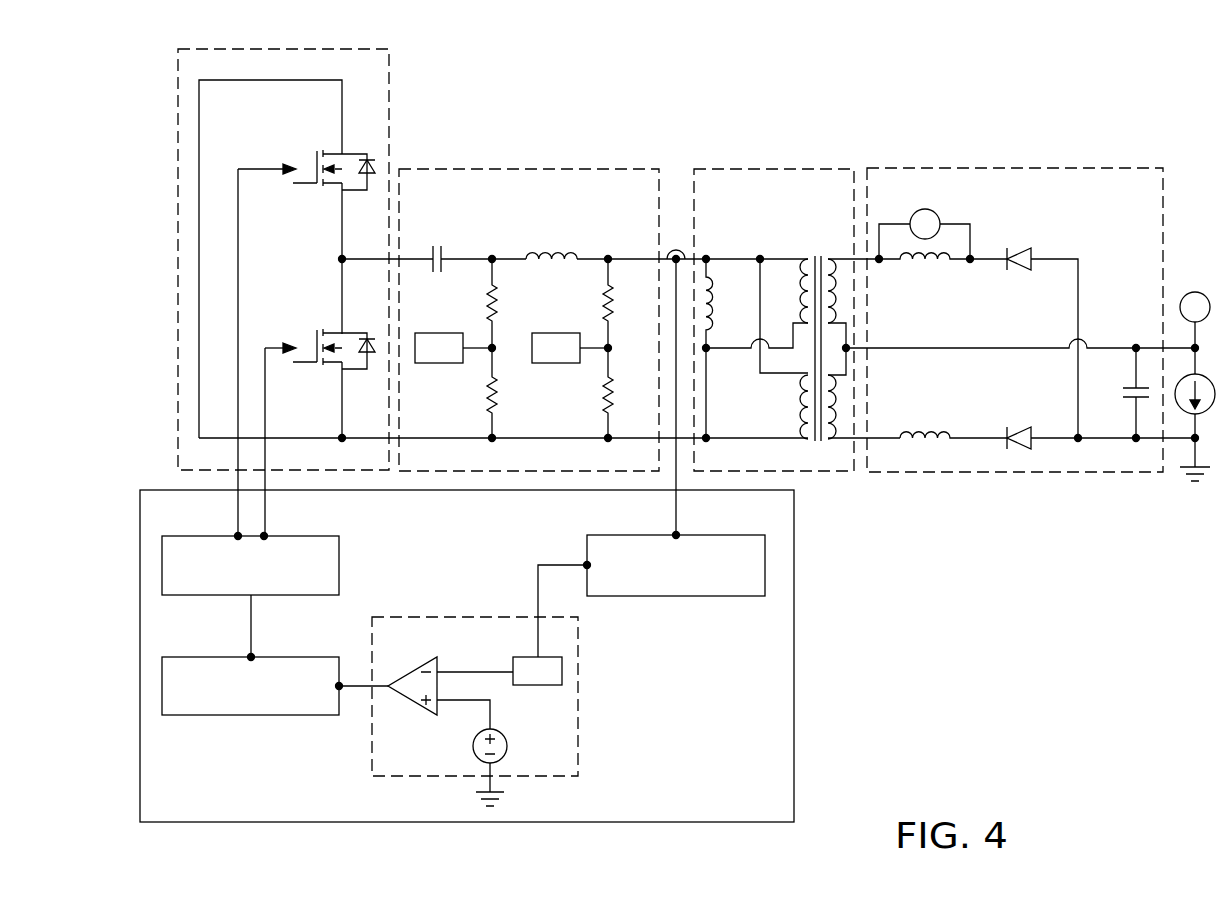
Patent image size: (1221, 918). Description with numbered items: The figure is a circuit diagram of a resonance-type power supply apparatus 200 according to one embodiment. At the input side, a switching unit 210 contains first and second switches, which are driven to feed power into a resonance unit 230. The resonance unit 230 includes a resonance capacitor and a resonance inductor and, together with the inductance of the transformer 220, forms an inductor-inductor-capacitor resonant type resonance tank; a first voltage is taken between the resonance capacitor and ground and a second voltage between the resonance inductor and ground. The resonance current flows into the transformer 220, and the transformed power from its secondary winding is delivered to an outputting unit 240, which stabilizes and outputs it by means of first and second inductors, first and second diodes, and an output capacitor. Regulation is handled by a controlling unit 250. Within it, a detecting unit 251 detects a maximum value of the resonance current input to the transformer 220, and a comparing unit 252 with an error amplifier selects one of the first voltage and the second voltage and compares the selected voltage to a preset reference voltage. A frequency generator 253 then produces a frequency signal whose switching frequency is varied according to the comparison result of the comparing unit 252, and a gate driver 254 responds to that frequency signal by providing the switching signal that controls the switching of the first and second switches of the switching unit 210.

The resonance-type power supply apparatus 200 is at (778, 50).
The switching unit 210 is at (333, 49).
The transformer 220 is at (801, 169).
The resonance unit 230 is at (600, 169).
The outputting unit 240 is at (1108, 169).
The controlling unit 250 is at (794, 535).
The detecting unit 251 is at (729, 535).
The comparing unit 252 is at (578, 645).
The frequency generator 253 is at (305, 657).
The gate driver 254 is at (305, 536).